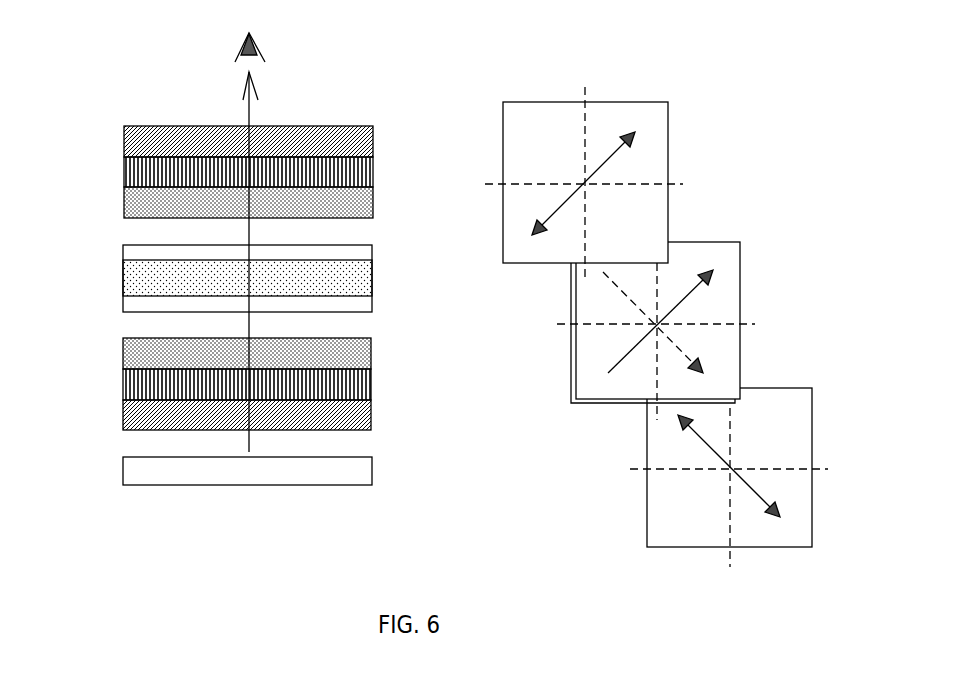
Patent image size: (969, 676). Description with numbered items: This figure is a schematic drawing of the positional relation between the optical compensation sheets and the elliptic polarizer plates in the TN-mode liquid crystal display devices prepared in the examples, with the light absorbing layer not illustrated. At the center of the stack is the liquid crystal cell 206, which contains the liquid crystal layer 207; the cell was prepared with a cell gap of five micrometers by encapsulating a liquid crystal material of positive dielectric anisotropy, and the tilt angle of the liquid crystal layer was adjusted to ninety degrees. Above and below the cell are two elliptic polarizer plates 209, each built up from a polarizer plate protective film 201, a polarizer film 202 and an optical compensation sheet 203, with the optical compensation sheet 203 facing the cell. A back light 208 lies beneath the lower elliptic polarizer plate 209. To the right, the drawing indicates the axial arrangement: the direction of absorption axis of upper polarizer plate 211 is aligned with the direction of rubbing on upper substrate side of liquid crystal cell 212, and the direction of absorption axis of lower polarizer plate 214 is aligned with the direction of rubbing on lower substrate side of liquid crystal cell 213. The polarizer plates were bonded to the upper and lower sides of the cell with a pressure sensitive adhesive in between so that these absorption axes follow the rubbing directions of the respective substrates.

The polarizer plate protective film 201 is at (142, 142).
The polarizer film 202 is at (142, 172).
The optical compensation sheet 203 is at (142, 203).
The liquid crystal cell 206 is at (317, 278).
The liquid crystal layer 207 is at (142, 280).
The back light 208 is at (140, 472).
The elliptic polarizer plate 209 is at (353, 284).
The direction of absorption axis of upper polarizer plate 211 is at (605, 165).
The direction of rubbing on upper substrate side of liquid crystal cell 212 is at (680, 302).
The direction of rubbing on lower substrate side of liquid crystal cell 213 is at (678, 342).
The direction of absorption axis of lower polarizer plate 214 is at (717, 457).